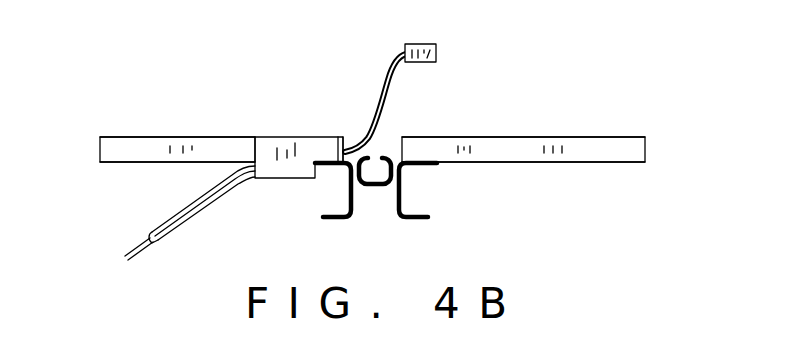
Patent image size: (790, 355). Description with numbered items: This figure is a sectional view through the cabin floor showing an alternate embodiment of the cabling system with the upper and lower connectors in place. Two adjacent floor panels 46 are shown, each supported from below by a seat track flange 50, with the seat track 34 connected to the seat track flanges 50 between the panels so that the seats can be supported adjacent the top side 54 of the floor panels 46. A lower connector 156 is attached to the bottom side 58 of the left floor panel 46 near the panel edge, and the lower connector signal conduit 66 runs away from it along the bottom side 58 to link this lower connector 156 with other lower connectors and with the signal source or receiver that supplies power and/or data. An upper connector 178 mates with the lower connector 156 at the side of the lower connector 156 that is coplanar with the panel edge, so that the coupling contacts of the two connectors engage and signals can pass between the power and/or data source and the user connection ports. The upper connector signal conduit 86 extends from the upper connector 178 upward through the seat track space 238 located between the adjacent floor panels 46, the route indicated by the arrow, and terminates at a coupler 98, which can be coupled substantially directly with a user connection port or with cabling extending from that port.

The seat track 34 is at (376, 186).
The floor panel 46 is at (143, 147).
The seat track flange 50 is at (324, 213).
The top side of the floor panel 54 is at (210, 137).
The bottom side of the floor panel 58 is at (130, 163).
The lower connector signal conduit 66 is at (203, 209).
The upper connector signal conduit 86 is at (378, 91).
The coupler 98 is at (435, 45).
The lower connector 156 is at (283, 152).
The upper connector 178 is at (346, 137).
The seat track space 238 is at (393, 129).